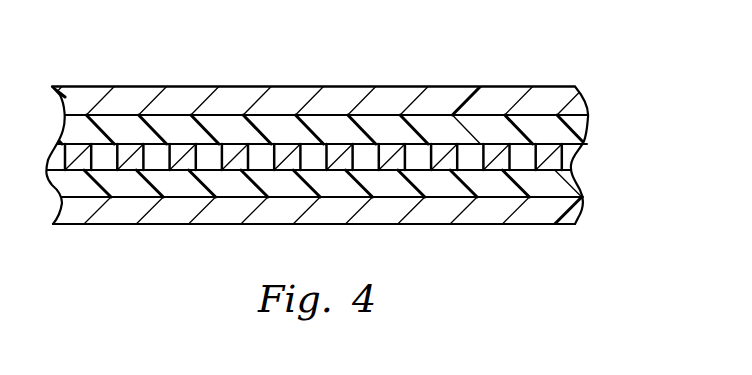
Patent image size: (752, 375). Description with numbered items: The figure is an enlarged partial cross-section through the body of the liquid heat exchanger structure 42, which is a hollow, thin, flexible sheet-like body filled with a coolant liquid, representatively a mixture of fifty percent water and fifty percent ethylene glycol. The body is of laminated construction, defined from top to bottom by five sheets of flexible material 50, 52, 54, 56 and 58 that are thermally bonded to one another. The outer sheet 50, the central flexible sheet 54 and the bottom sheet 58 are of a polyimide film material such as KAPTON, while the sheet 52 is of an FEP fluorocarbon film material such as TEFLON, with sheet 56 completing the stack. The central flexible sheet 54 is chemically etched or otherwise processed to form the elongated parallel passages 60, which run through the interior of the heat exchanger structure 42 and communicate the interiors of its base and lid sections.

The heat exchanger structure 42 is at (164, 73).
The flexible sheet 50 is at (584, 96).
The flexible sheet 52 is at (586, 133).
The central flexible sheet 54 is at (575, 160).
The flexible sheet 56 is at (575, 184).
The flexible sheet 58 is at (578, 209).
The elongated parallel passages 60 is at (155, 160).